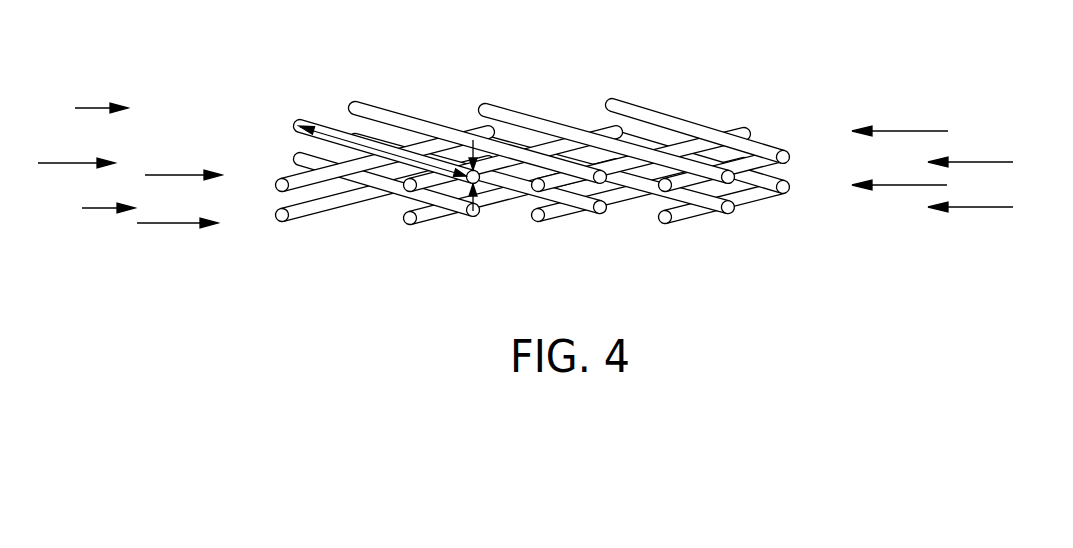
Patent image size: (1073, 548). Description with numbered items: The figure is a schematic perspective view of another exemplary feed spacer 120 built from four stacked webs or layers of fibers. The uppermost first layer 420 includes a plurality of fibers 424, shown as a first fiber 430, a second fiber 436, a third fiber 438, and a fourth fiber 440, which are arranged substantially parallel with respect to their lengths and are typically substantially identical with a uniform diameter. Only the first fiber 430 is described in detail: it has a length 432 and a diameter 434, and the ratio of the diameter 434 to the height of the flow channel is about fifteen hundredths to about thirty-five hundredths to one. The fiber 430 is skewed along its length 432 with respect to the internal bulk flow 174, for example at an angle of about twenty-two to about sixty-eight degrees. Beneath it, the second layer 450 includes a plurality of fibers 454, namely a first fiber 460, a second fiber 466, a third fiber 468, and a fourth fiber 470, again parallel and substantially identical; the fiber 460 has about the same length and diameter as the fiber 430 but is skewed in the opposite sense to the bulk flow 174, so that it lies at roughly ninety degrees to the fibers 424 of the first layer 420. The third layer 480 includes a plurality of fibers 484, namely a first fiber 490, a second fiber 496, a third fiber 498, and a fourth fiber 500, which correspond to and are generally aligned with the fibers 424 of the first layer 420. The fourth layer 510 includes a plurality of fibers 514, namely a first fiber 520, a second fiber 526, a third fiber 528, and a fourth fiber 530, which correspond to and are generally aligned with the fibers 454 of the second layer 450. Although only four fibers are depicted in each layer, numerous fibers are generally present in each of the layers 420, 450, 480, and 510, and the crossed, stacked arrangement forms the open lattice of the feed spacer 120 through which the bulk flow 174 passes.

The feed spacer 120 is at (570, 184).
The bulk flow 174 is at (57, 162).
The first layer 420 is at (902, 131).
The fibers 424 is at (95, 105).
The first fiber 430 is at (322, 120).
The length 432 is at (372, 152).
The diameter 434 is at (490, 186).
The second fiber 436 is at (384, 110).
The third fiber 438 is at (512, 112).
The fourth fiber 440 is at (772, 148).
The second layer 450 is at (175, 173).
The fibers 454 is at (993, 162).
The first fiber 460 is at (276, 178).
The second fiber 466 is at (407, 193).
The third fiber 468 is at (740, 128).
The fourth fiber 470 is at (753, 168).
The third layer 480 is at (900, 186).
The fibers 484 is at (93, 209).
The first fiber 490 is at (461, 208).
The second fiber 496 is at (602, 213).
The third fiber 498 is at (728, 215).
The fourth fiber 500 is at (791, 181).
The fourth layer 510 is at (168, 224).
The fibers 514 is at (988, 207).
The first fiber 520 is at (298, 213).
The second fiber 526 is at (433, 218).
The third fiber 528 is at (550, 215).
The fourth fiber 530 is at (666, 224).